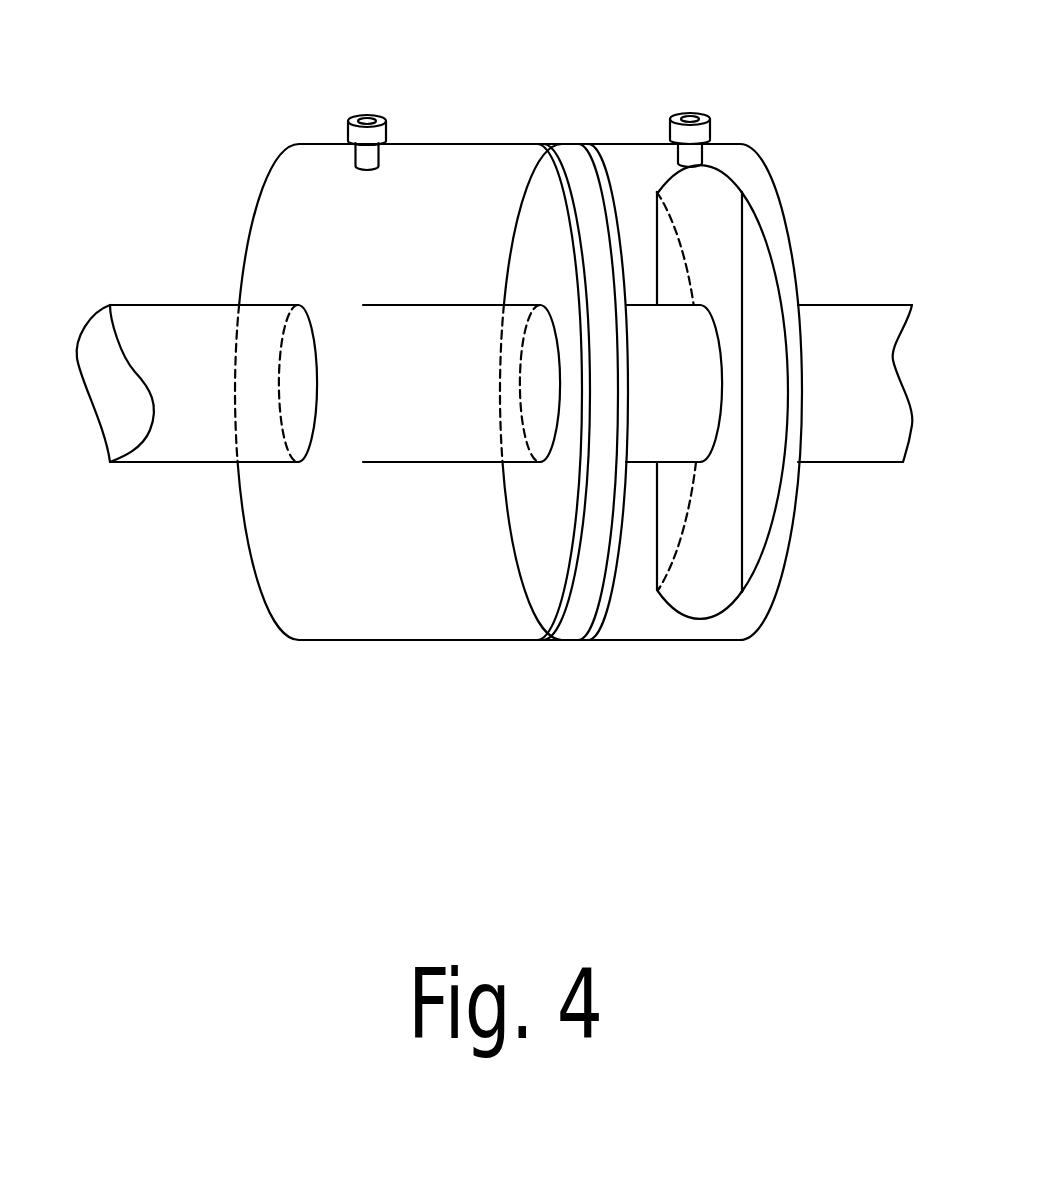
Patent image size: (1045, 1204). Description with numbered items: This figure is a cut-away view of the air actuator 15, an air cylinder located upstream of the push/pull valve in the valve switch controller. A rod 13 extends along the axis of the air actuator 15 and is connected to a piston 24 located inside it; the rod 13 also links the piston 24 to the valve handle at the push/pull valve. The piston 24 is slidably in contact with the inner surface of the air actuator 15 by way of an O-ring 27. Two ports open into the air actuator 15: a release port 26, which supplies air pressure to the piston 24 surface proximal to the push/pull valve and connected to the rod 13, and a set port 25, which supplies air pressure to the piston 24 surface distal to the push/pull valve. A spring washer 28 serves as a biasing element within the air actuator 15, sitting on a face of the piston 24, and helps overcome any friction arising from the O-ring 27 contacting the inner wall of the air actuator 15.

The rod 13 is at (187, 443).
The air actuator 15 is at (474, 645).
The piston 24 is at (545, 575).
The set port 25 is at (688, 137).
The release port 26 is at (367, 140).
The O-ring 27 is at (582, 163).
The spring washer 28 is at (722, 565).